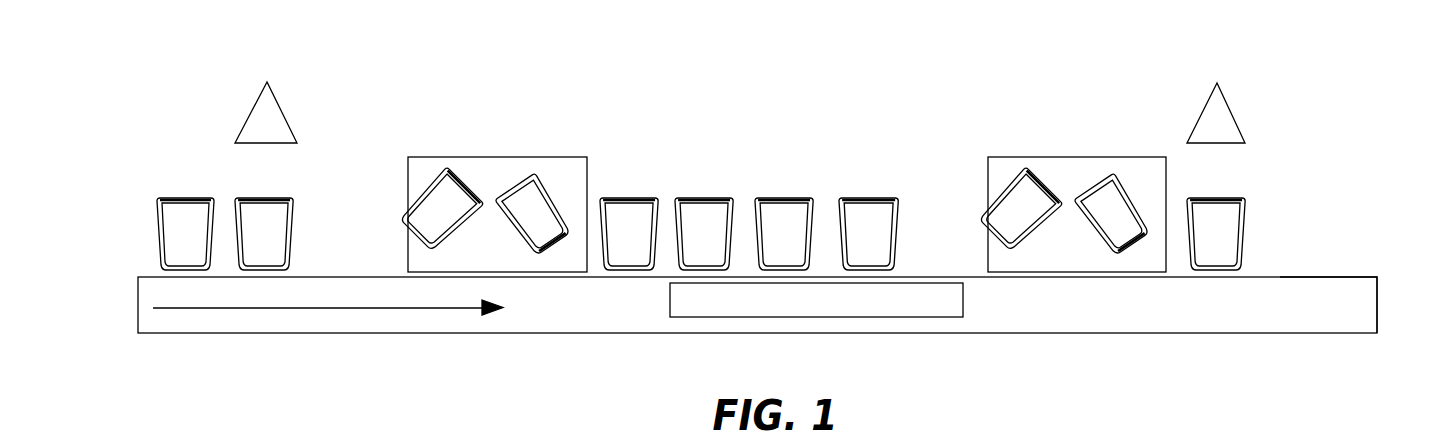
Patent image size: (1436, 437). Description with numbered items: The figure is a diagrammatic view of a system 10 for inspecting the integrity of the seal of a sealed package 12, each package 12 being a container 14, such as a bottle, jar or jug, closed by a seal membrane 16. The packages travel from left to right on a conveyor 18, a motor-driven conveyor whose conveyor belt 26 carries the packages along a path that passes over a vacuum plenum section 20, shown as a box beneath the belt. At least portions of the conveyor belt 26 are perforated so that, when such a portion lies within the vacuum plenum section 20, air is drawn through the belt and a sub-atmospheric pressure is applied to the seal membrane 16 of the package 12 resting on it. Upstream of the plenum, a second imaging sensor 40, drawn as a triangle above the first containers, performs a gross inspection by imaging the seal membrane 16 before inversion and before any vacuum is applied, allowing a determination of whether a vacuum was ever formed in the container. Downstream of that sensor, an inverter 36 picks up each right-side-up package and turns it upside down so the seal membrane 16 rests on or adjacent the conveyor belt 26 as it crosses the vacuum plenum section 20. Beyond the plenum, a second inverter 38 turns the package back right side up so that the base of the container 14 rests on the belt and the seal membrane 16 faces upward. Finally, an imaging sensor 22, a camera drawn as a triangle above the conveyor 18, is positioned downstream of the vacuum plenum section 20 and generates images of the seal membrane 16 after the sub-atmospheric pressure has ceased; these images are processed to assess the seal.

The system 10 is at (898, 54).
The sealed package 12 is at (157, 218).
The container 14 is at (158, 241).
The seal membrane 16 is at (173, 201).
The conveyor 18 is at (139, 310).
The vacuum plenum section 20 is at (670, 301).
The imaging sensor 22 is at (1225, 102).
The conveyor belt 26 is at (1338, 276).
The inverter 36 is at (485, 157).
The second inverter 38 is at (1060, 157).
The second imaging sensor 40 is at (272, 97).